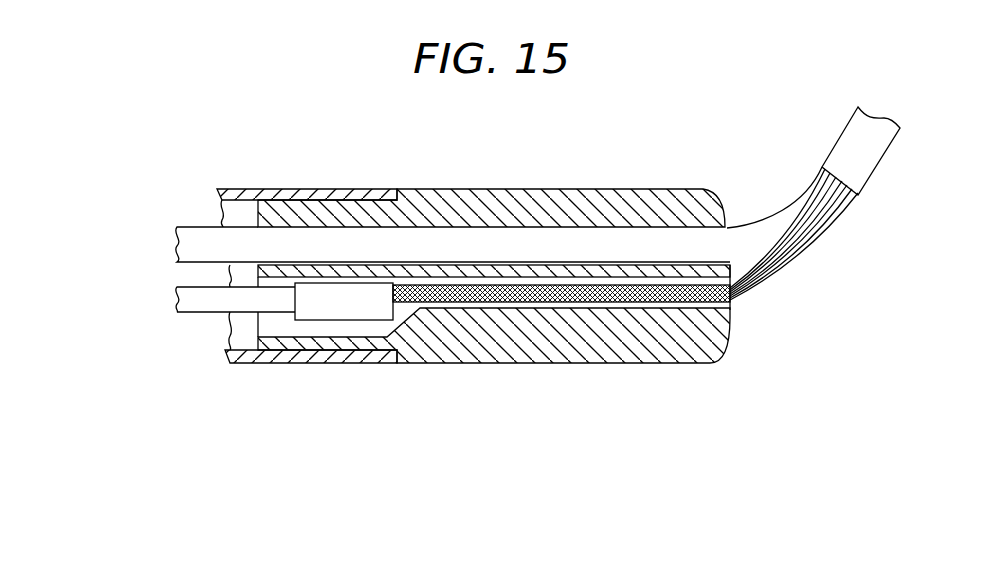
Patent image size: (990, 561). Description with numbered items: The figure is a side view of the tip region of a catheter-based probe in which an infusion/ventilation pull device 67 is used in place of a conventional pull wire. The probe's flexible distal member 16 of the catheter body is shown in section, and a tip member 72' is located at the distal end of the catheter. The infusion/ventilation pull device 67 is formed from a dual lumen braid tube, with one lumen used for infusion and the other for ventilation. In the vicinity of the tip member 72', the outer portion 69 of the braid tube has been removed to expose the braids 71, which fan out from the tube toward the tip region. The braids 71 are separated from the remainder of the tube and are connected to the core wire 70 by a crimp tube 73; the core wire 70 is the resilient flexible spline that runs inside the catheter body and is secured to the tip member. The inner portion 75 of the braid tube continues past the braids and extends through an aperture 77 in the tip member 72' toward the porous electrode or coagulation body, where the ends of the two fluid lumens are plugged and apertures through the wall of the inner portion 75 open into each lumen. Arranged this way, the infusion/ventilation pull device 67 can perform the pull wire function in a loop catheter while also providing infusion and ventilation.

The distal member 16 is at (330, 192).
The aperture 77 is at (583, 228).
The tip member 72' is at (522, 340).
The inner portion 75 is at (203, 232).
The core wire 70 is at (195, 295).
The crimp tube 73 is at (343, 308).
The braids 71 is at (763, 278).
The infusion/ventilation pull device 67 is at (815, 115).
The outer portion 69 is at (866, 189).